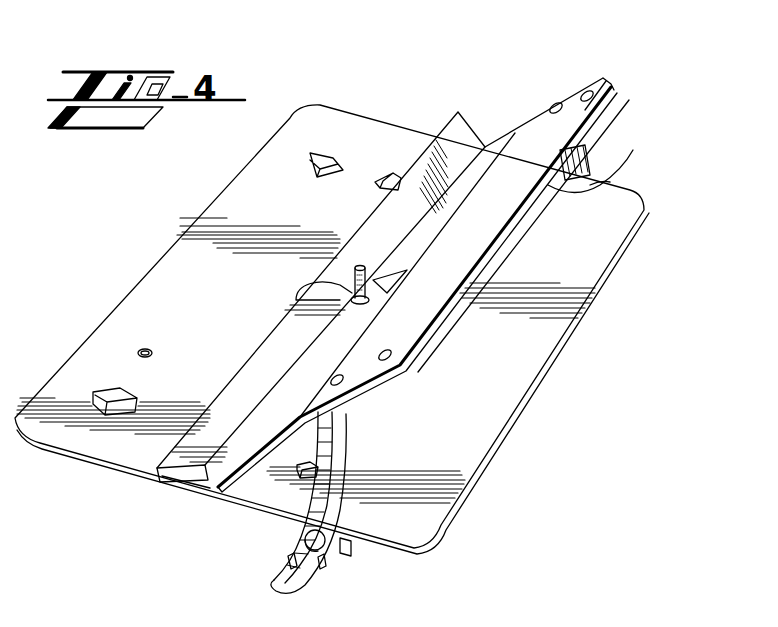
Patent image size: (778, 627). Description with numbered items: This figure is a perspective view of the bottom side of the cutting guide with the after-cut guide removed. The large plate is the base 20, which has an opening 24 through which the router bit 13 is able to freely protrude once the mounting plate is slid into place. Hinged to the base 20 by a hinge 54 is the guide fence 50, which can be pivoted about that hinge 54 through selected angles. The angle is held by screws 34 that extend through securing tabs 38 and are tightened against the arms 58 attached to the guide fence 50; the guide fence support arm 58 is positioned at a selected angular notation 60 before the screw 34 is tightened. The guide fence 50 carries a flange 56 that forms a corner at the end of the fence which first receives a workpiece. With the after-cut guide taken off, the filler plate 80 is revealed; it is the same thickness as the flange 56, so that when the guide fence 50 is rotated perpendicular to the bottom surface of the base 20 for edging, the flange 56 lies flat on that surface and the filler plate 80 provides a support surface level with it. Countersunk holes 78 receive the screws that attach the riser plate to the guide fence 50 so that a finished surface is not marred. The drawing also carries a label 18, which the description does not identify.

The router bit 13 is at (355, 268).
The mounting hole 18 is at (138, 352).
The base 20 is at (603, 288).
The opening 24 is at (310, 283).
The screws 34 is at (305, 538).
The securing tabs 38 is at (352, 548).
The guide fence 50 is at (590, 185).
The hinge 54 is at (193, 475).
The flange 56 is at (462, 110).
The guide fence support arm 58 is at (575, 155).
The angular notation 60 is at (291, 560).
The countersunk holes 78 is at (555, 104).
The filler plate 80 is at (190, 475).